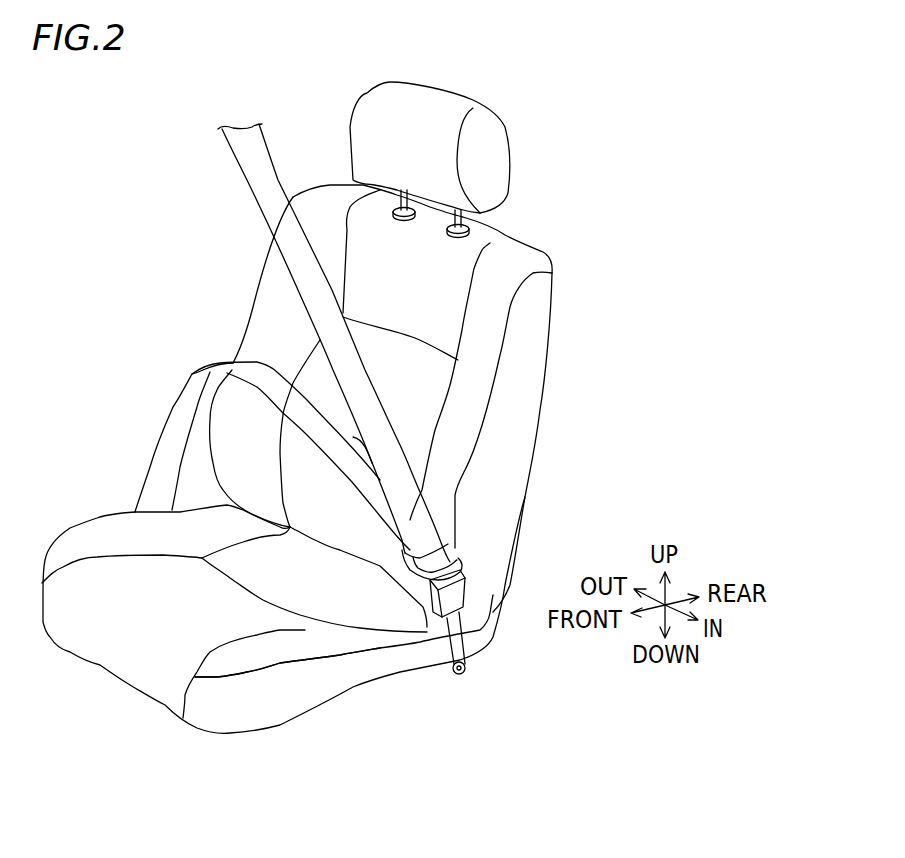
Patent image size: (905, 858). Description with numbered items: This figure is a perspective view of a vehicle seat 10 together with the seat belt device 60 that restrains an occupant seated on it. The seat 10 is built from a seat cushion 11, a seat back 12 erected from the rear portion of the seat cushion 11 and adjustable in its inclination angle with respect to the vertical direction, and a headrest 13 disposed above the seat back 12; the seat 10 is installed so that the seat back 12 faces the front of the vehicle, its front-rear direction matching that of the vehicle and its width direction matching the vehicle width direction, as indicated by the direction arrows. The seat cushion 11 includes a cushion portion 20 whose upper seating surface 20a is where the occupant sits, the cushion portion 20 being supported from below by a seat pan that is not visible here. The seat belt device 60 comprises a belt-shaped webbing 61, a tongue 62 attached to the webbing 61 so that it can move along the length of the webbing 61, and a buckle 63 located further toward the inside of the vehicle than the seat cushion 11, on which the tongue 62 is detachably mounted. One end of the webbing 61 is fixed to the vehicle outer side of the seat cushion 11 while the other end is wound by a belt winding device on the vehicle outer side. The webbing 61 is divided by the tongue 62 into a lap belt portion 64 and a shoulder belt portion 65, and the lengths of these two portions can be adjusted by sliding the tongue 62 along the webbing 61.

The vehicle seat 10 is at (330, 407).
The seat cushion 11 is at (75, 542).
The seat back 12 is at (517, 407).
The headrest 13 is at (487, 153).
The cushion portion 20 is at (276, 604).
The seating surface 20a is at (243, 627).
The seat belt device 60 is at (296, 399).
The webbing 61 is at (280, 343).
The tongue 62 is at (458, 540).
The buckle 63 is at (470, 587).
The lap belt portion 64 is at (289, 429).
The shoulder belt portion 65 is at (300, 265).